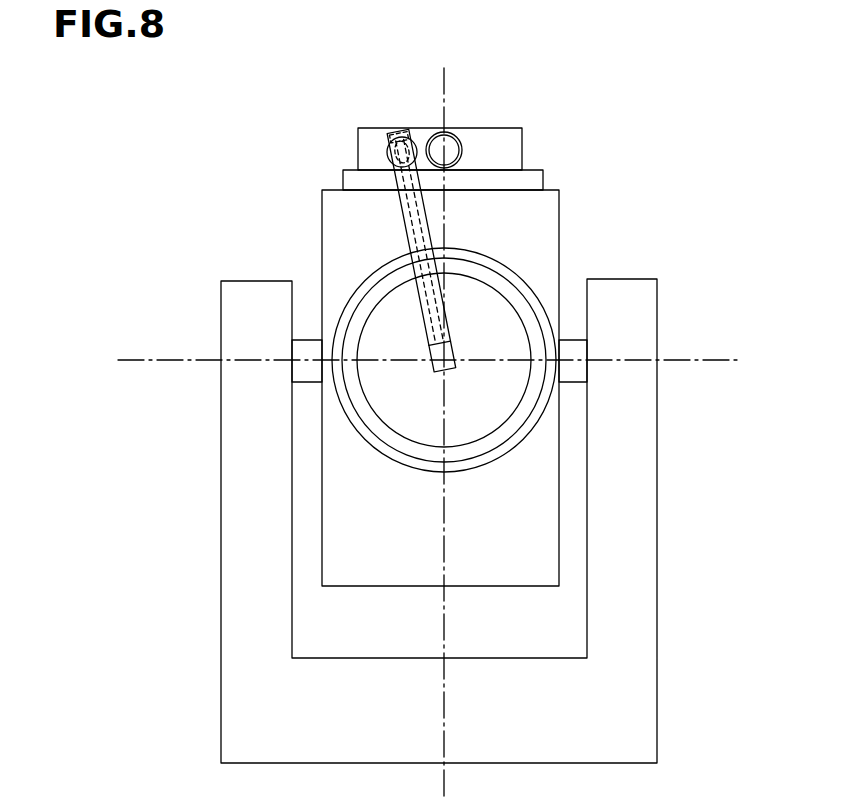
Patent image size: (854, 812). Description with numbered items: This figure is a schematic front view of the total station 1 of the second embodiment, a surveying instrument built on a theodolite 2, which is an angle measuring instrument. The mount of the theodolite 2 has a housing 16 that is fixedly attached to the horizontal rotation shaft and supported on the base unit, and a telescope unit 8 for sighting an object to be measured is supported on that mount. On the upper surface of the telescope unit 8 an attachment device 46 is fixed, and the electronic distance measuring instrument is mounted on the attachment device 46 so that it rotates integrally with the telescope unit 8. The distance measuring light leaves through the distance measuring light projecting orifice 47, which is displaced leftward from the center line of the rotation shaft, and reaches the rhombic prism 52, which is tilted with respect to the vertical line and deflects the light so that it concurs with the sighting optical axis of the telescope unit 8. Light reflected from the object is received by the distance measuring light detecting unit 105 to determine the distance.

The total station 1 is at (197, 124).
The theodolite 2 is at (653, 252).
The telescope unit 8 is at (510, 272).
The housing 16 is at (657, 517).
The attachment device 46 is at (527, 140).
The distance measuring light projecting orifice 47 is at (387, 151).
The rhombic prism 52 is at (410, 231).
The distance measuring light detecting unit 105 is at (461, 140).